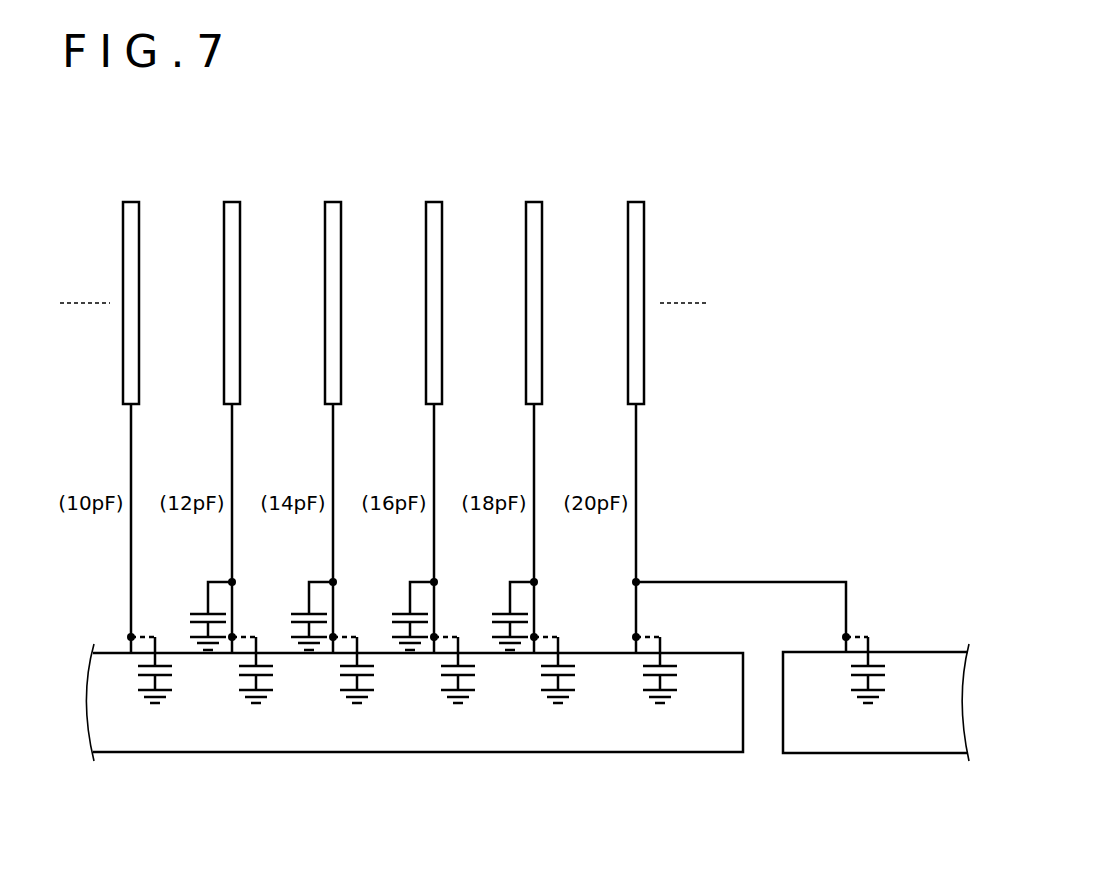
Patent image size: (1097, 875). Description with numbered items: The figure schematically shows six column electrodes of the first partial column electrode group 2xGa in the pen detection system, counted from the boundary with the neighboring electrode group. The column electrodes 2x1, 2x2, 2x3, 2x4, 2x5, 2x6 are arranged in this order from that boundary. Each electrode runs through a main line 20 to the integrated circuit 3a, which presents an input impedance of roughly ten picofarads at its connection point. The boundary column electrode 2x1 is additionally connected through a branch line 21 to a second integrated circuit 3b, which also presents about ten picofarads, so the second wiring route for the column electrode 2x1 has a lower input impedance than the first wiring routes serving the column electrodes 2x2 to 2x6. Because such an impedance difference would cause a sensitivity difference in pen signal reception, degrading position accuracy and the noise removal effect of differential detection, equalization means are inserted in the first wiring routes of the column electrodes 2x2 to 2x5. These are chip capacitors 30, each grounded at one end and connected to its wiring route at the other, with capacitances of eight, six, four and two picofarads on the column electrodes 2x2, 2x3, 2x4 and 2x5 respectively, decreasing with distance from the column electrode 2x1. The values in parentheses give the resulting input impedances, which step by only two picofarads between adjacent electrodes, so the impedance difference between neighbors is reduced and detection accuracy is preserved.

The first partial column electrode group 2xGa is at (60, 140).
The column electrode 2x1 is at (636, 202).
The column electrode 2x2 is at (534, 202).
The column electrode 2x3 is at (434, 202).
The column electrode 2x4 is at (333, 202).
The column electrode 2x5 is at (232, 202).
The column electrode 2x6 is at (131, 202).
The main line 20 is at (117, 445).
The branch line 21 is at (812, 582).
The capacitors 30 is at (162, 575).
The integrated circuit 3a is at (410, 752).
The integrated circuit 3b is at (882, 753).